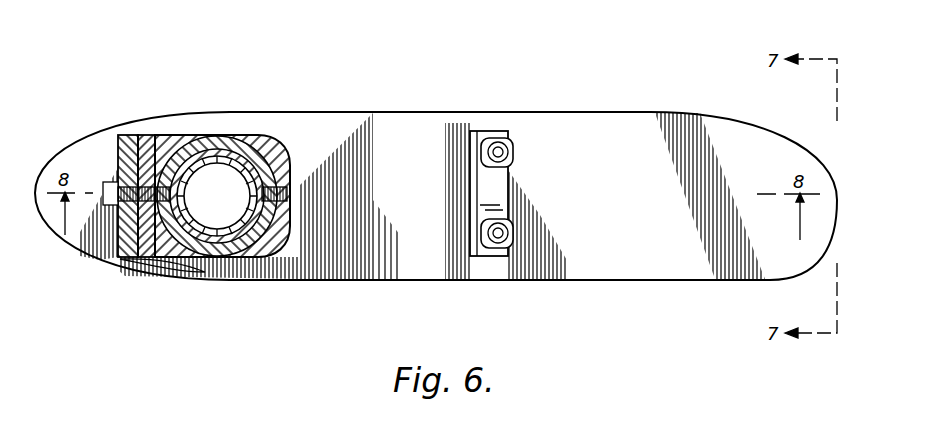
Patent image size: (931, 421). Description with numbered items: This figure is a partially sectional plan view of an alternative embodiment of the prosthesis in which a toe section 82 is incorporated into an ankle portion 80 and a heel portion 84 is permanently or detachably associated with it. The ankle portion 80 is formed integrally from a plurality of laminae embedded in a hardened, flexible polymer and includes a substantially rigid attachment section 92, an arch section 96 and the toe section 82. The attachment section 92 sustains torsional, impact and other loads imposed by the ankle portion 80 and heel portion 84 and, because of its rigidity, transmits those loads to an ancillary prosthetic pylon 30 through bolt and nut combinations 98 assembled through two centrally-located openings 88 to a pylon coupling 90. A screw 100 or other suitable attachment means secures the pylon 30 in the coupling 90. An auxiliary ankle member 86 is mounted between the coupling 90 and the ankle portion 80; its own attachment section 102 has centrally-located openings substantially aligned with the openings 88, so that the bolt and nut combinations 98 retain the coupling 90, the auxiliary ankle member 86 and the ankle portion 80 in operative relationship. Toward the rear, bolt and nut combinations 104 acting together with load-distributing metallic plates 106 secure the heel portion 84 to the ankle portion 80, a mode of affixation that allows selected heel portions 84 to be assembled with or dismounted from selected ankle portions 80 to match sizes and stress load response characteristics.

The pylon 30 is at (198, 142).
The ankle portion 80 is at (438, 108).
The toe section 82 is at (680, 240).
The heel portion 84 is at (130, 286).
The auxiliary ankle member 86 is at (309, 290).
The openings 88 is at (98, 262).
The coupling 90 is at (238, 120).
The attachment section 92 is at (127, 136).
The arch section 96 is at (423, 223).
The bolt and nut combinations 98 is at (98, 184).
The screw 100 is at (295, 185).
The attachment section 102 is at (145, 137).
The bolt and nut combinations 104 is at (512, 138).
The load-distributing metallic plates 106 is at (492, 137).